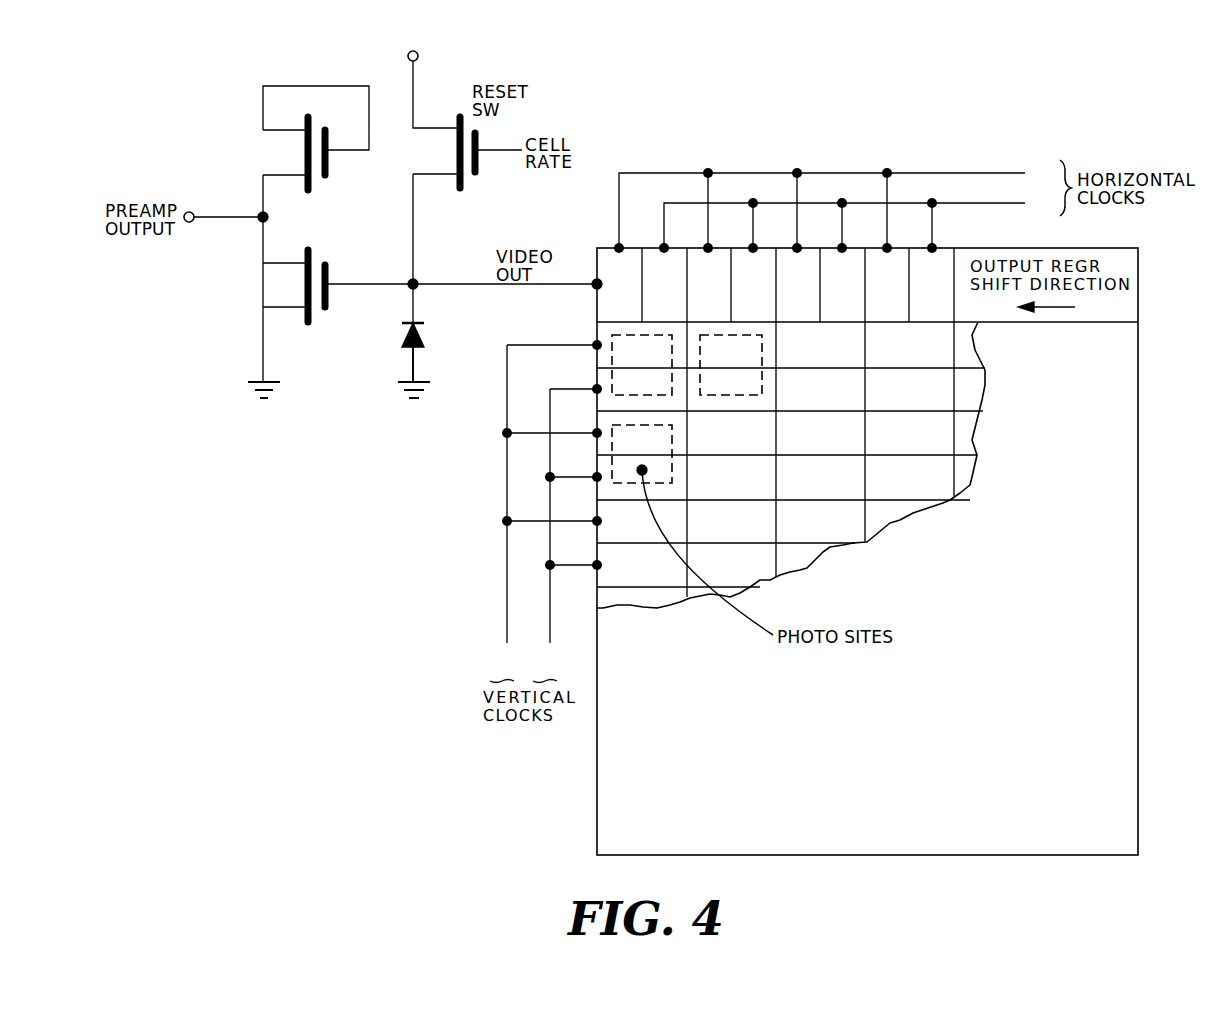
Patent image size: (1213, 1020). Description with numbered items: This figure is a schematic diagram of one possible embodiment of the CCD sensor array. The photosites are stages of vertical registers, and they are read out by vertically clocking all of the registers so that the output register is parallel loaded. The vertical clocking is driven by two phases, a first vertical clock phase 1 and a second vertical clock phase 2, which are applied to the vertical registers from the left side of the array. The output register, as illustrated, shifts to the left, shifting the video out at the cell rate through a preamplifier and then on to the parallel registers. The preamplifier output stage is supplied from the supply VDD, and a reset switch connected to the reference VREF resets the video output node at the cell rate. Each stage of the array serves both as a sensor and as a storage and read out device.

The vertical clock phase 1 is at (546, 511).
The vertical clock phase 2 is at (567, 533).
The preamp supply / load transistor VDD is at (276, 229).
The reset switch reference VREF is at (456, 212).